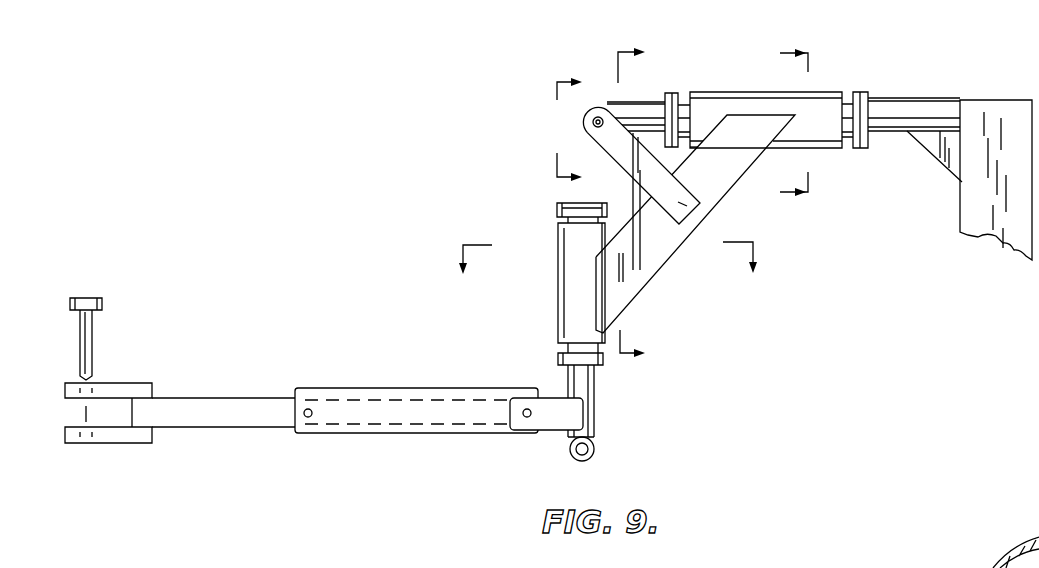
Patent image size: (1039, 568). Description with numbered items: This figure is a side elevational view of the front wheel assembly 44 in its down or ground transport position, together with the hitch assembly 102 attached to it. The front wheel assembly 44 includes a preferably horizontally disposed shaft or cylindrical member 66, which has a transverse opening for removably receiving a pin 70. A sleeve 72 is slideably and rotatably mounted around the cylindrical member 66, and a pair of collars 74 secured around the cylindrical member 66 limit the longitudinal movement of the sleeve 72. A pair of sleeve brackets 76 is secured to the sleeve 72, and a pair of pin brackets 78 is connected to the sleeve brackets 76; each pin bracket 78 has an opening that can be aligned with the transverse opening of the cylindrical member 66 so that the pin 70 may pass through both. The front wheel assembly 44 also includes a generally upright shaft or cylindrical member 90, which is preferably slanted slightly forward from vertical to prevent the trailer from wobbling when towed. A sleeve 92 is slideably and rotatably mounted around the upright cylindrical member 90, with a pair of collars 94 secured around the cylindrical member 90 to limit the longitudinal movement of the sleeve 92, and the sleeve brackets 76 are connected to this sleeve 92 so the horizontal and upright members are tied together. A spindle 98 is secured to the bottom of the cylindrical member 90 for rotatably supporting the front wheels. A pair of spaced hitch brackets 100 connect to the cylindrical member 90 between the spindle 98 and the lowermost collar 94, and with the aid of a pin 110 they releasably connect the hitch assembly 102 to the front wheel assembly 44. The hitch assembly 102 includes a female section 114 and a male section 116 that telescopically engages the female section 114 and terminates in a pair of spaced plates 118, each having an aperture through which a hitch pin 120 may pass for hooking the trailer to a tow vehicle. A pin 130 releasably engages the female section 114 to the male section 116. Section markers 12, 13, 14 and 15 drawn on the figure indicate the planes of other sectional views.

The section line 12- 12 is at (586, 131).
The section line 13- 13 is at (780, 123).
The section line 14- 14 is at (612, 275).
The section line 15- 15 is at (650, 207).
The front wheel assembly 44 is at (490, 116).
The cylindrical member 66 is at (640, 112).
The pin 70 is at (590, 123).
The sleeve 72 is at (825, 93).
The collars 74 is at (673, 100).
The sleeve brackets 76 is at (742, 166).
The pin brackets 78 is at (699, 213).
The cylindrical member 90 is at (585, 381).
The sleeve 92 is at (562, 305).
The collars 94 is at (563, 204).
The spindle 98 is at (598, 450).
The hitch brackets 100 is at (550, 420).
The hitch assembly 102 is at (286, 359).
The pin 110 is at (518, 420).
The female section 114 is at (426, 420).
The male section 116 is at (175, 415).
The spaced plates 118 is at (112, 384).
The hitch pin 120 is at (98, 300).
The pin 130 is at (310, 420).